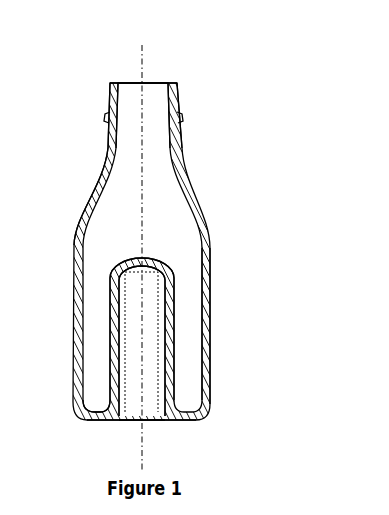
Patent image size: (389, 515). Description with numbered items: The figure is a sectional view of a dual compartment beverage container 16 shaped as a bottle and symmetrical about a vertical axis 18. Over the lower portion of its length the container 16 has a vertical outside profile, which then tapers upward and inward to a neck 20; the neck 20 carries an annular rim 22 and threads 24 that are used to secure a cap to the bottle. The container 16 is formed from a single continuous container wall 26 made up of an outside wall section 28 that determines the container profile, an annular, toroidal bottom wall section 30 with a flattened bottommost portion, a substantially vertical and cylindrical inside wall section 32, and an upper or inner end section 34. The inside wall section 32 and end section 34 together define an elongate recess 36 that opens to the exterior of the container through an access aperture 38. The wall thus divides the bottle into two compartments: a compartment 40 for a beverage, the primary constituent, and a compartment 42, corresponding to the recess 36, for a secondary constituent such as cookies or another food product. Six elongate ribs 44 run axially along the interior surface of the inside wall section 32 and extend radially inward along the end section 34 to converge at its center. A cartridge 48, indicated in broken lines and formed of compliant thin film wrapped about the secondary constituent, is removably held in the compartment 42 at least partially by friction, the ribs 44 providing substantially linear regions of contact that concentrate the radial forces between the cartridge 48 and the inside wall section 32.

The dual compartment beverage container 16 is at (250, 113).
The vertical axis 18 is at (144, 68).
The neck 20 is at (109, 132).
The annular rim 22 is at (183, 118).
The threads 24 is at (111, 96).
The container wall 26 is at (82, 208).
The outside wall section 28 is at (210, 258).
The bottom wall section 30 is at (192, 420).
The inside wall section 32 is at (110, 322).
The end section 34 is at (150, 258).
The elongate recess 36 is at (115, 413).
The access aperture 38 is at (175, 414).
The compartment 40 is at (204, 226).
The compartment 42 is at (130, 362).
The ribs 44 is at (167, 360).
The cartridge 48 is at (120, 288).